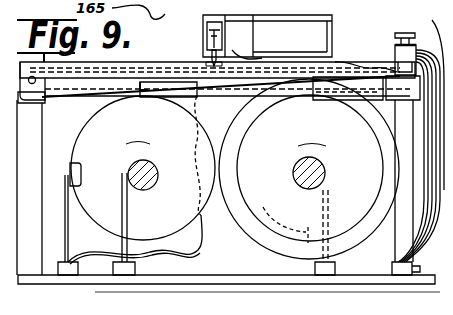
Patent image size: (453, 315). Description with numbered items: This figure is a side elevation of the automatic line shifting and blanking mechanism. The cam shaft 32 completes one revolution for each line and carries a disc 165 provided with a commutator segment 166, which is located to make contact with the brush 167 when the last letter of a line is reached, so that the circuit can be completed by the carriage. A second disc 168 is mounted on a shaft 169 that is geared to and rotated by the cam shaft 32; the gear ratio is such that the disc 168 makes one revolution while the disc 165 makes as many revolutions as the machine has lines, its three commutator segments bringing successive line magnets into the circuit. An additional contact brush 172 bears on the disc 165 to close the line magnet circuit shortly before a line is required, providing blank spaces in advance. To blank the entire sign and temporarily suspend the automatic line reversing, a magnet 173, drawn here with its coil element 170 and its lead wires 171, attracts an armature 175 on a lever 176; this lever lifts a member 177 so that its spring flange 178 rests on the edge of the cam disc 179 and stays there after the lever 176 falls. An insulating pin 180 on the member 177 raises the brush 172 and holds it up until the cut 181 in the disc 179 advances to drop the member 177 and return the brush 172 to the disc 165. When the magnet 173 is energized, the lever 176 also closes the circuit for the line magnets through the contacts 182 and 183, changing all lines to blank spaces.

The cam shaft 32 is at (153, 188).
The disc 165 is at (143, 179).
The commutator segment 166 is at (80, 175).
The brush 167 is at (75, 206).
The disc 168 is at (262, 242).
The shaft 169 is at (296, 170).
The electromagnet coil 170 is at (191, 28).
The lead wires 171 is at (421, 132).
The contact brush 172 is at (90, 95).
The magnet 173 is at (332, 42).
The armature 175 is at (314, 57).
The lever 176 is at (403, 175).
The member 177 is at (256, 86).
The spring flange 178 is at (348, 89).
The cam disc 179 is at (309, 170).
The insulating pin 180 is at (168, 91).
The cut 181 is at (288, 221).
The contact 182 is at (408, 47).
The contact 183 is at (203, 55).